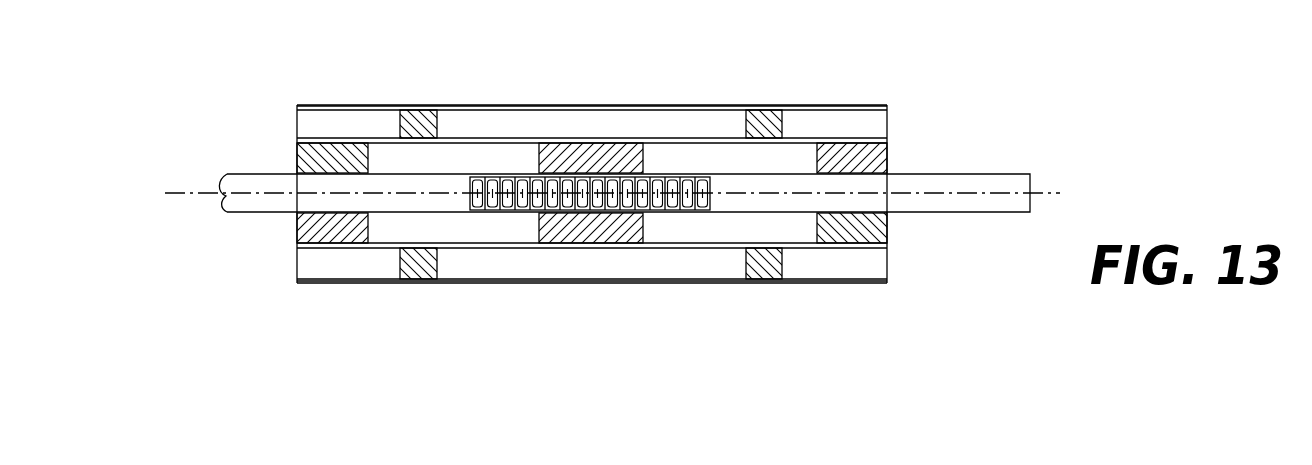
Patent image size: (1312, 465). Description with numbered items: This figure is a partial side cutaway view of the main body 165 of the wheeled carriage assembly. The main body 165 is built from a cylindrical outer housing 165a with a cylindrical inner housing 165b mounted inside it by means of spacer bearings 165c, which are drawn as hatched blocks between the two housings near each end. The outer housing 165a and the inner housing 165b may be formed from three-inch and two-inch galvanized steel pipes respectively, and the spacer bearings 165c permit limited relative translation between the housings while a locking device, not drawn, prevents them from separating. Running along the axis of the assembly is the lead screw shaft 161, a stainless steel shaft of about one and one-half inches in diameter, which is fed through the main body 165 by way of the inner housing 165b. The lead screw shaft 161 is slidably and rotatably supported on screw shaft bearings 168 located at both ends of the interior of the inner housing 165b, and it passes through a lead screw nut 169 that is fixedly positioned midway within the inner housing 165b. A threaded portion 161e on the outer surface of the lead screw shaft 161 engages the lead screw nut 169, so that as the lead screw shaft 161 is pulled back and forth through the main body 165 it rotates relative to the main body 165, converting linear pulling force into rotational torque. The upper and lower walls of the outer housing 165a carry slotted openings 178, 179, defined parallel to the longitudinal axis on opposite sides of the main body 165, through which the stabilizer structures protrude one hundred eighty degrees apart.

The lead screw shaft 161 is at (639, 212).
The threaded portion 161e is at (683, 213).
The main body 165 is at (604, 173).
The cylindrical outer housing 165a is at (820, 107).
The cylindrical inner housing 165b is at (363, 138).
The spacer bearings 165c is at (405, 117).
The screw shaft bearings 168 is at (297, 160).
The lead screw nut 169 is at (540, 227).
The slotted opening 178 is at (566, 105).
The slotted opening 179 is at (611, 285).